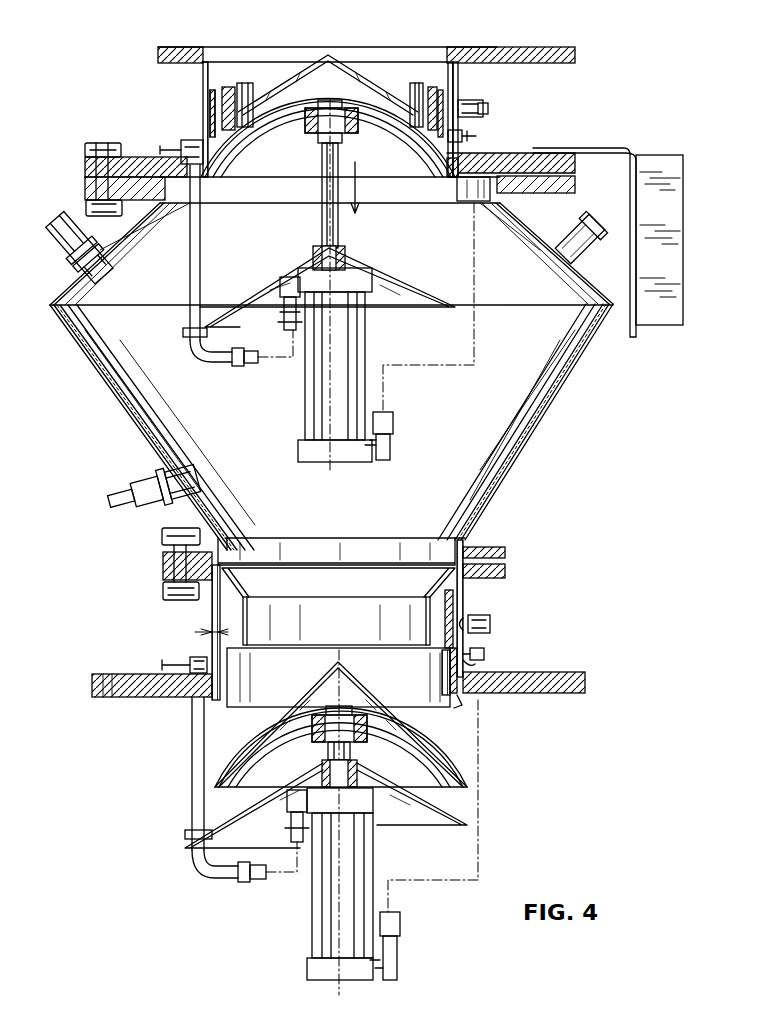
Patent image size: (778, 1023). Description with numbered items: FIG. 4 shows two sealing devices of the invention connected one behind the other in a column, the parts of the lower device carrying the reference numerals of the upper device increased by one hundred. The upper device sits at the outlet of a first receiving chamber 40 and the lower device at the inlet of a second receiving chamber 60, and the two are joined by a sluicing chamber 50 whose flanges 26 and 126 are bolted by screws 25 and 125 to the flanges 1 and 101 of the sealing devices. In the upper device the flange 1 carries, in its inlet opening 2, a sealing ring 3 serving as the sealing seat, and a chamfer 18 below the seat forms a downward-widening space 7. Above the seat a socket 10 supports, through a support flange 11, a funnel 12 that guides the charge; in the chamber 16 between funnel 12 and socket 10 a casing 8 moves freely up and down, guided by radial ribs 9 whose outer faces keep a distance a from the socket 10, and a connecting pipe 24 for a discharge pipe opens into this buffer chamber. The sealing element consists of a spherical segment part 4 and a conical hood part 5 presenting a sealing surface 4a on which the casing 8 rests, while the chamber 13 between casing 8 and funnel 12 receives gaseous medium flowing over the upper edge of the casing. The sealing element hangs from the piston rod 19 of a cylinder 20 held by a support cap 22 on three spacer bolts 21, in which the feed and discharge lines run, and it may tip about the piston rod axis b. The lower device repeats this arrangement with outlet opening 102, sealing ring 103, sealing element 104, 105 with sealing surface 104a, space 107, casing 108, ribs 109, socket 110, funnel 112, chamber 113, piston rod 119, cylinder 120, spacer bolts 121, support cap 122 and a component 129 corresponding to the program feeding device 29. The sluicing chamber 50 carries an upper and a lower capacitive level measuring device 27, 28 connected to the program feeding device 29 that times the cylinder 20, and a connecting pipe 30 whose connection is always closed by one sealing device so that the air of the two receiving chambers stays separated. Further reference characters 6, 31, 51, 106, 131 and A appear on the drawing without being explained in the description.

The flange 1 is at (471, 200).
The inlet opening 2 is at (440, 155).
The sealing ring 3 is at (452, 170).
The spherical segment part 4 is at (416, 120).
The sealing surface 4a is at (259, 108).
The conical hood part 5 is at (345, 68).
The inner dome shell 6 is at (238, 163).
The space 7 is at (200, 196).
The casing 8 is at (440, 108).
The guide ribs 9 is at (481, 105).
The socket 10 is at (470, 77).
The support flange 11 is at (468, 47).
The funnel 12 is at (437, 50).
The chamber 13 is at (428, 112).
The chamber 16 is at (203, 143).
The chamfer 18 is at (465, 200).
The piston rod 19 is at (325, 222).
The cylinder 20 is at (320, 410).
The spacer bolts 21 is at (199, 238).
The support cap 22 is at (262, 293).
The connecting pipe 24 is at (488, 108).
The screws 25 is at (105, 148).
The flange 26 is at (142, 158).
The level measuring device 27 is at (95, 222).
The level measuring device 28 is at (140, 478).
The program feeding device 29 is at (659, 325).
The connecting pipe 30 is at (573, 233).
The screw 31 is at (474, 136).
The receiving chamber 40 is at (298, 52).
The sluicing chamber 50 is at (476, 453).
The hopper lining 51 is at (518, 444).
The receiving chamber 60 is at (528, 789).
The flange 101 is at (165, 568).
The outlet opening 102 is at (450, 676).
The sealing ring 103 is at (458, 696).
The spherical segment part 104 is at (224, 773).
The sealing surface 104a is at (243, 745).
The conical hood part 105 is at (358, 672).
The cylinder wall 106 is at (236, 672).
The space 107 is at (470, 696).
The casing 108 is at (450, 670).
The guide ribs 109 is at (472, 655).
The socket 110 is at (478, 580).
The funnel 112 is at (222, 598).
The chamber 113 is at (448, 605).
The piston rod 119 is at (334, 770).
The cylinder 120 is at (338, 930).
The spacer bolts 121 is at (195, 800).
The support cap 122 is at (400, 822).
The screws 125 is at (163, 550).
The flange 126 is at (500, 549).
The program feeding device 129 is at (491, 625).
The clamp screw 131 is at (476, 664).
The section line A is at (358, 186).
The distance a is at (210, 636).
The piston rod axis b is at (312, 372).